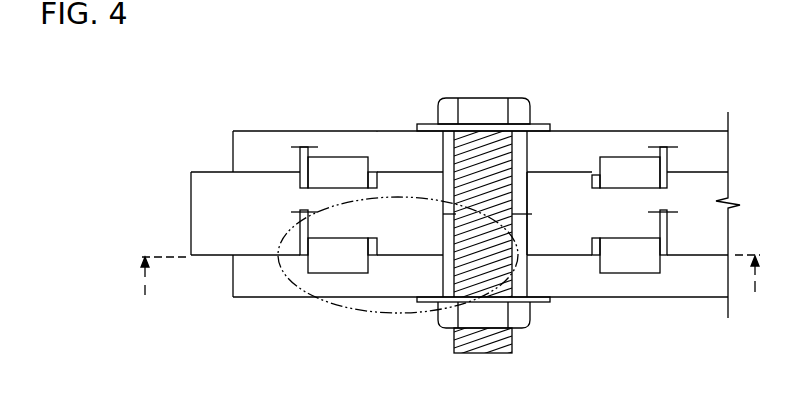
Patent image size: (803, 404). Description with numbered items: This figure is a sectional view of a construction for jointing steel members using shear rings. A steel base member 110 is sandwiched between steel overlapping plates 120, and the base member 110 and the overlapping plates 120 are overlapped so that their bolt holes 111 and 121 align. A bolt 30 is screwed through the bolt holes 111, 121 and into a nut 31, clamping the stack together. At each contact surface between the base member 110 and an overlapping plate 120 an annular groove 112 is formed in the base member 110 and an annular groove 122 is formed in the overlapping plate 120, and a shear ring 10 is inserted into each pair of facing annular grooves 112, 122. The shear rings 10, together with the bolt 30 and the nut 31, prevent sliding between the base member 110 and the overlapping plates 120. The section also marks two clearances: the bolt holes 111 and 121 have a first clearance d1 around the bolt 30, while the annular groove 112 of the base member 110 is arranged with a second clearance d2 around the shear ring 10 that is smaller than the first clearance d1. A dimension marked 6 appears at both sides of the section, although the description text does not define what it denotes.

The gap / clearance 6 is at (450, 260).
The shear ring 10 is at (342, 172).
The bolt 30 is at (487, 112).
The nut 31 is at (525, 313).
The steel base member 110 is at (222, 217).
The bolt hole 111 is at (522, 235).
The annular groove 112 is at (374, 176).
The steel overlapping plate 120 is at (245, 152).
The bolt hole 121 is at (522, 163).
The annular groove 122 is at (371, 173).
The first clearance d1 is at (479, 213).
The second clearance d2 is at (484, 172).